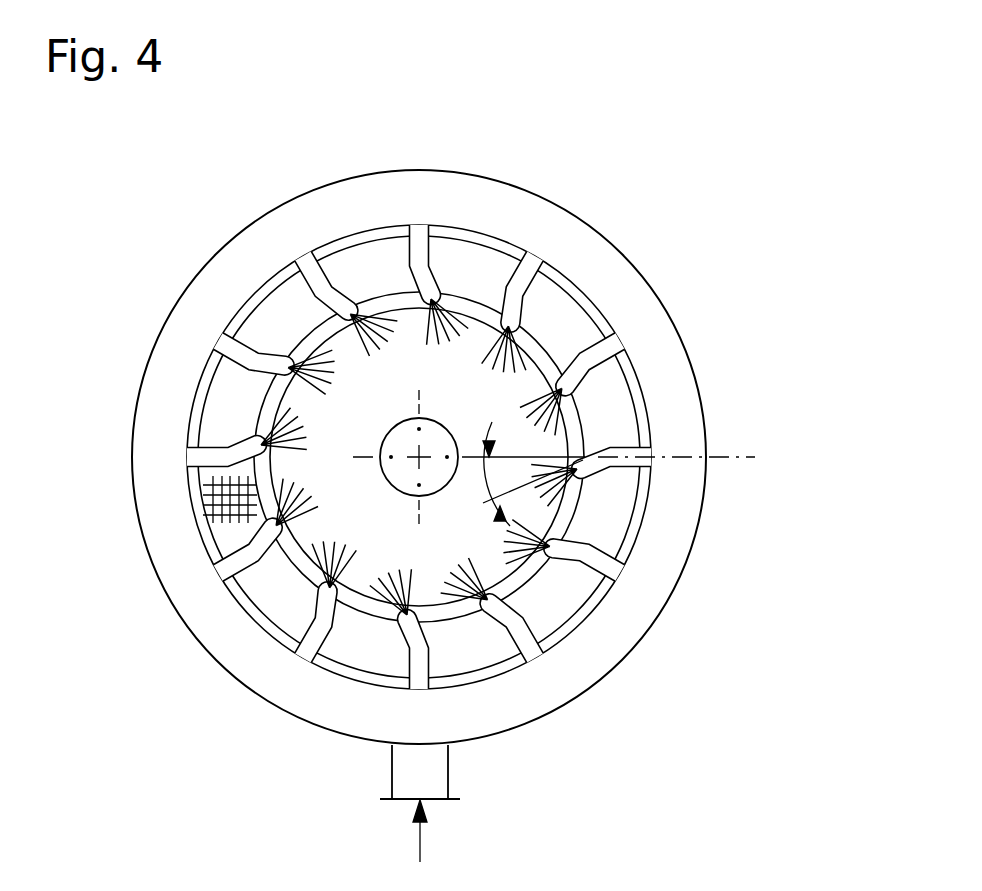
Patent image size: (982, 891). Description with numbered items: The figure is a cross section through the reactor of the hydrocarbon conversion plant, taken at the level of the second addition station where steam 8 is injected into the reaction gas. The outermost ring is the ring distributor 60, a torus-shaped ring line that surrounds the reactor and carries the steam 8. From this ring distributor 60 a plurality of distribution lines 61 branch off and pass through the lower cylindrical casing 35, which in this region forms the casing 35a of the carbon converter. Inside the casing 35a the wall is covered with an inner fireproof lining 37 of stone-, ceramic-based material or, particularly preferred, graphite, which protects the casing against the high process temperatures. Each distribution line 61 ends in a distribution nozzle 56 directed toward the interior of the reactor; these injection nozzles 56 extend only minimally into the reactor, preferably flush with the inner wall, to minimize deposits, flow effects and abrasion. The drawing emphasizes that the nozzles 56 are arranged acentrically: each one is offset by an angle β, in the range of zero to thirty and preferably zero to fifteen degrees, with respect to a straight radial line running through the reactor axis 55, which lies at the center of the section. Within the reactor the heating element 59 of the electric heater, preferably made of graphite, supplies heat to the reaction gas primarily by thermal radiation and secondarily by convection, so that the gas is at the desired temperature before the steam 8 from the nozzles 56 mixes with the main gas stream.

The steam 8 is at (421, 838).
The lower cylindrical casing 35 is at (507, 457).
The casing of the C converter 35a is at (600, 317).
The inner fireproof lining 37 is at (612, 398).
The reactor axis 55 is at (419, 457).
The distribution nozzles 56 is at (593, 477).
The heating element 59 is at (587, 420).
The ring distributor 60 is at (668, 547).
The distribution lines 61 is at (530, 610).